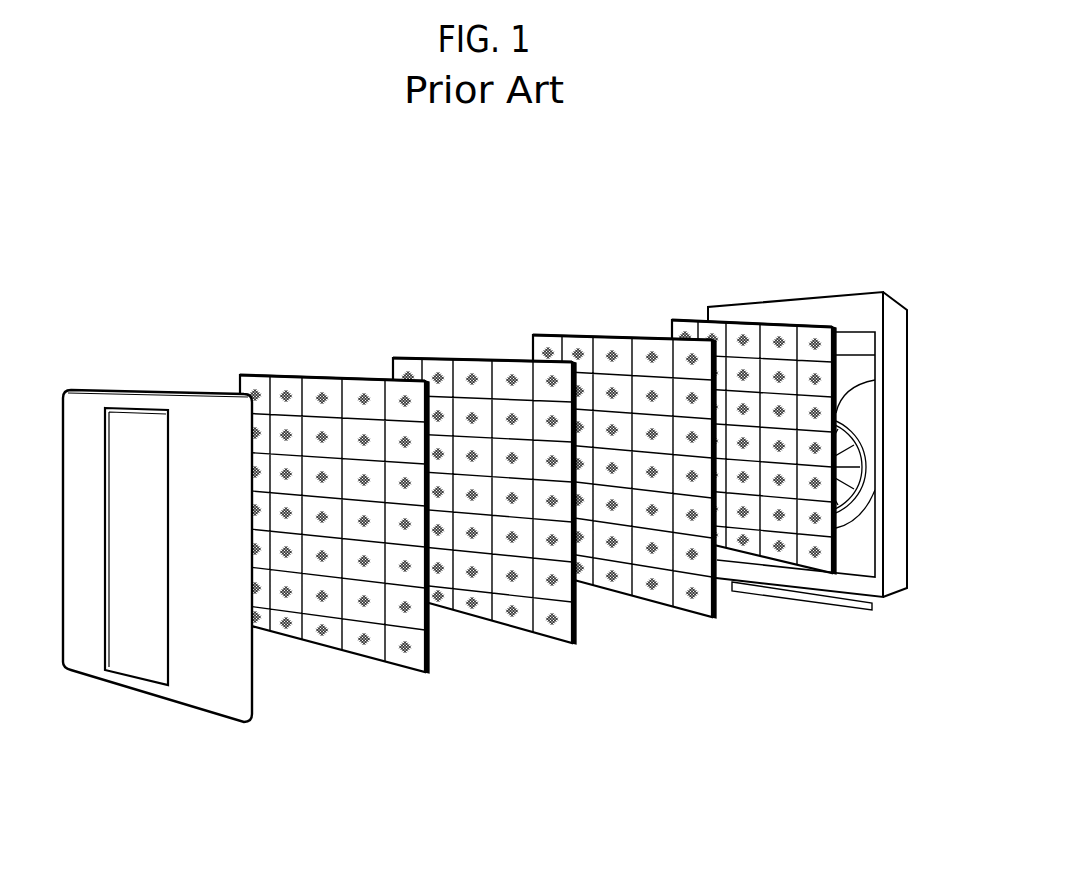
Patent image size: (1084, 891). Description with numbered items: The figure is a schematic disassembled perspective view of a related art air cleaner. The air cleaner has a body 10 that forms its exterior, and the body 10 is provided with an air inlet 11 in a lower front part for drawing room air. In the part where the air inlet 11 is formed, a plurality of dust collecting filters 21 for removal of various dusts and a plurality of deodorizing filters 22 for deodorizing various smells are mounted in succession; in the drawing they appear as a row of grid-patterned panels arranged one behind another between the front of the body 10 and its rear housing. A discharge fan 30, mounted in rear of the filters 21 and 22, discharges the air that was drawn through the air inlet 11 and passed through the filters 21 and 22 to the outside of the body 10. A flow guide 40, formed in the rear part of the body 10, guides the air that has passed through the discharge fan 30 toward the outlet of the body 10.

The body 10 is at (101, 393).
The air inlet 11 is at (137, 668).
The dust collecting filters 21 is at (548, 630).
The deodorizing filters 22 is at (820, 565).
The discharge fan 30 is at (847, 513).
The flow guide 40 is at (866, 450).